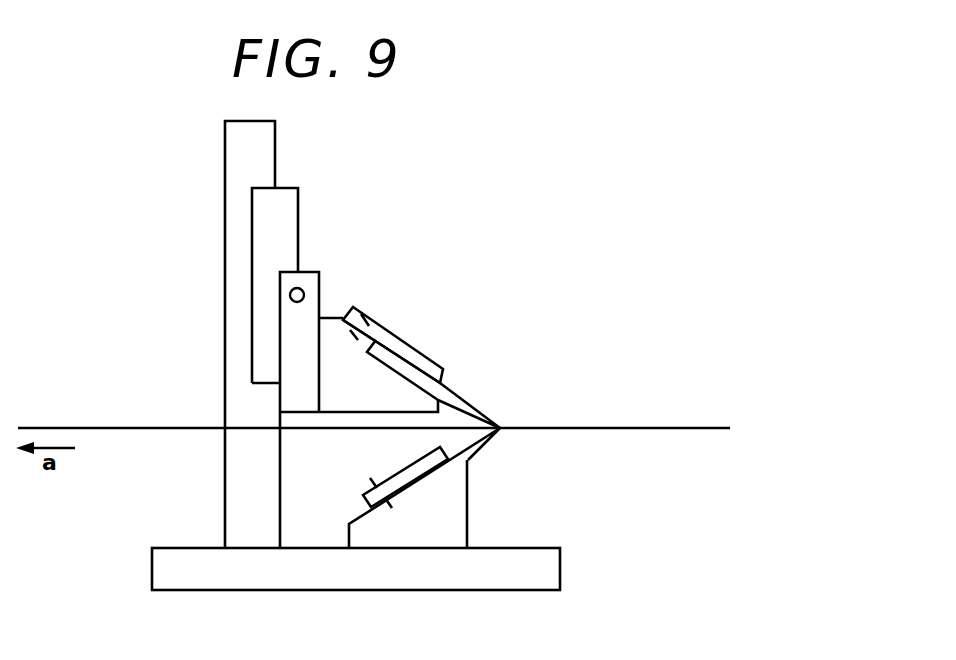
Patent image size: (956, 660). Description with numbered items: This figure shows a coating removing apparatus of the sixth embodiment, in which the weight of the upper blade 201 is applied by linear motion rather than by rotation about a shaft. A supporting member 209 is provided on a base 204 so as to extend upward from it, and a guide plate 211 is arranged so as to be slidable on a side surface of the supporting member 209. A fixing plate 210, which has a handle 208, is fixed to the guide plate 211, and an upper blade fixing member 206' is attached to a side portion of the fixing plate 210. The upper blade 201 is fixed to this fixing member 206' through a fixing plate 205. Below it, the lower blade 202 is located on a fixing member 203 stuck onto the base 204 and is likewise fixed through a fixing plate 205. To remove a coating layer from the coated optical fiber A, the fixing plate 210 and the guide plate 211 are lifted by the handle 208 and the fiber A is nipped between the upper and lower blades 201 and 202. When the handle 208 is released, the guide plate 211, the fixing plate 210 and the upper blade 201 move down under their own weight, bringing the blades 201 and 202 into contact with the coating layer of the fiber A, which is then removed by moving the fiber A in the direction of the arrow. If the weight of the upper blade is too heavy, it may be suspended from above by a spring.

The upper blade 201 is at (454, 390).
The lower blade 202 is at (480, 452).
The fixing member 203 is at (466, 513).
The base 204 is at (550, 565).
The fixing plate 205 is at (393, 343).
The upper blade fixing member 206' is at (378, 339).
The handle 208 is at (300, 288).
The supporting member 209 is at (238, 136).
The fixing plate 210 is at (287, 360).
The guide plate 211 is at (262, 236).
The coated optical fiber A is at (602, 427).